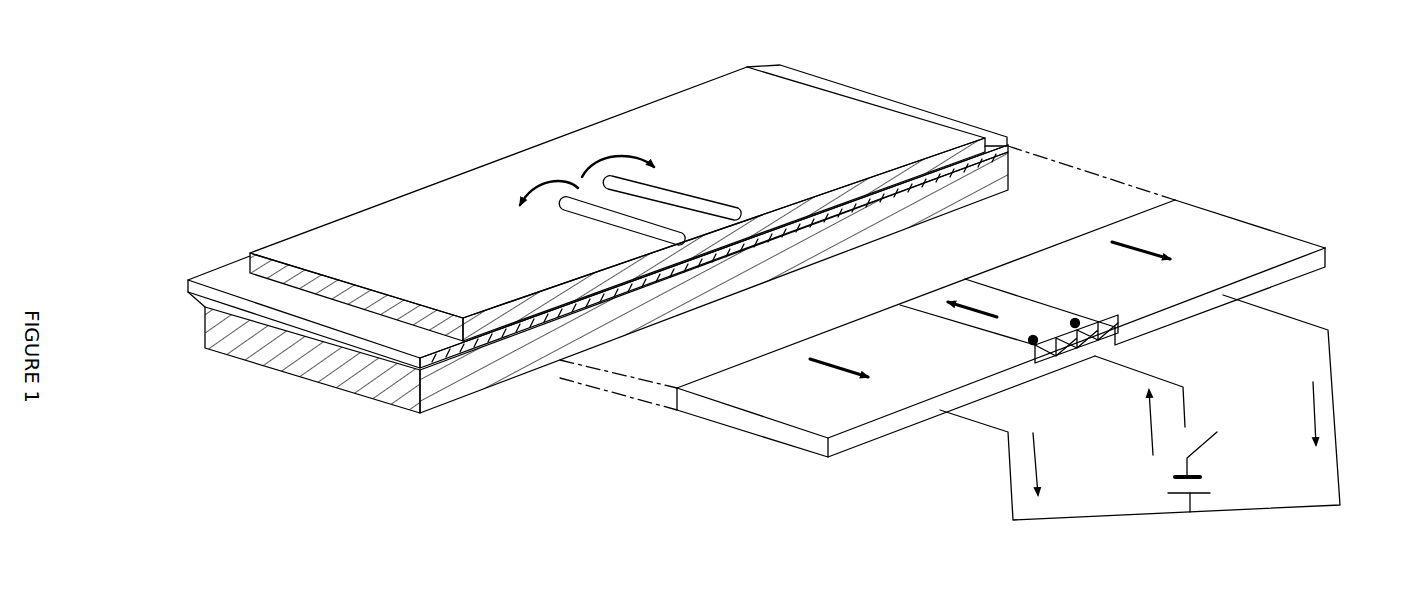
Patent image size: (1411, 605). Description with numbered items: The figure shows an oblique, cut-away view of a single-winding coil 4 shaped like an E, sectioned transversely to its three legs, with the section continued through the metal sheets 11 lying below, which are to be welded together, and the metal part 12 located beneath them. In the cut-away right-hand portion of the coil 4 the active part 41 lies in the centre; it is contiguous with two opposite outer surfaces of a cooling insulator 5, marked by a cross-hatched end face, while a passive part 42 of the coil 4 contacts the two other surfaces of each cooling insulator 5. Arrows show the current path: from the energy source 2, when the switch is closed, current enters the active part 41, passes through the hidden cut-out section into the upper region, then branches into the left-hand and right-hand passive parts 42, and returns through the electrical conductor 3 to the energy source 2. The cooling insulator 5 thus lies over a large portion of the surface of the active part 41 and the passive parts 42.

The energy source 2 is at (1164, 434).
The electrical conductor 3 is at (1006, 480).
The coil 4 is at (637, 203).
The cooling insulator 5 is at (600, 208).
The metal sheets 11 is at (251, 292).
The metal part 12 is at (261, 343).
The active part 41 is at (930, 293).
The passive part 42 is at (383, 236).